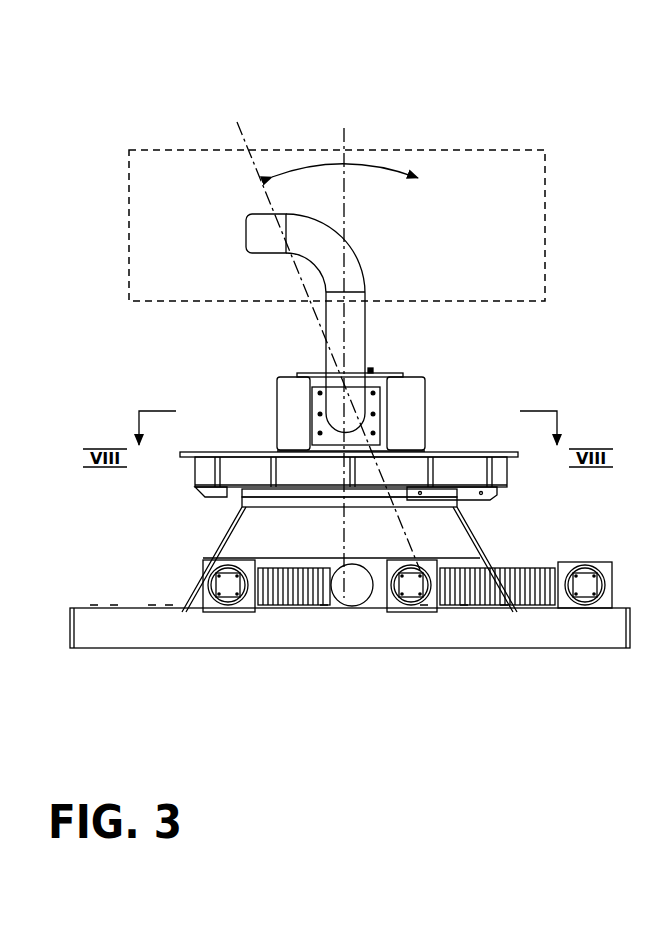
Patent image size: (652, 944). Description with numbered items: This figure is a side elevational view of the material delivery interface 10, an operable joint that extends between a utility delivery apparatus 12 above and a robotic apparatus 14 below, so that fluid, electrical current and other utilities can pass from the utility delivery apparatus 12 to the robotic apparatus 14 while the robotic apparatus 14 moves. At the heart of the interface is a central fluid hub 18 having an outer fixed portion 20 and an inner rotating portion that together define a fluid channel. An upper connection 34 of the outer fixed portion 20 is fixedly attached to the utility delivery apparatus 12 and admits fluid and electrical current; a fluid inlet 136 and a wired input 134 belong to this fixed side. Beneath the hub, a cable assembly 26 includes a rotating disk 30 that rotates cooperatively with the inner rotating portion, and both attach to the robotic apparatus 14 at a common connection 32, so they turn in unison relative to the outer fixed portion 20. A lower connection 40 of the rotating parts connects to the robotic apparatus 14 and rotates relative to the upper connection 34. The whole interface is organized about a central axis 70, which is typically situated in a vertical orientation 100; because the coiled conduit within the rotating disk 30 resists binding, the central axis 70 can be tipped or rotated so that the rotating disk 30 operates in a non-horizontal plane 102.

The material delivery interface 10 is at (467, 378).
The utility delivery apparatus 12 is at (503, 150).
The robotic apparatus 14 is at (158, 652).
The central fluid hub 18 is at (364, 388).
The outer fixed portion 20 is at (410, 410).
The cable assembly 26 is at (505, 505).
The rotating disk 30 is at (227, 497).
The common connection 32 is at (302, 507).
The upper connection 34 is at (331, 317).
The lower connection 40 is at (372, 562).
The central axis 70 is at (345, 140).
The vertical orientation 100 is at (322, 677).
The non-horizontal plane 102 is at (245, 144).
The wired input 134 is at (277, 412).
The fluid inlet 136 is at (255, 232).